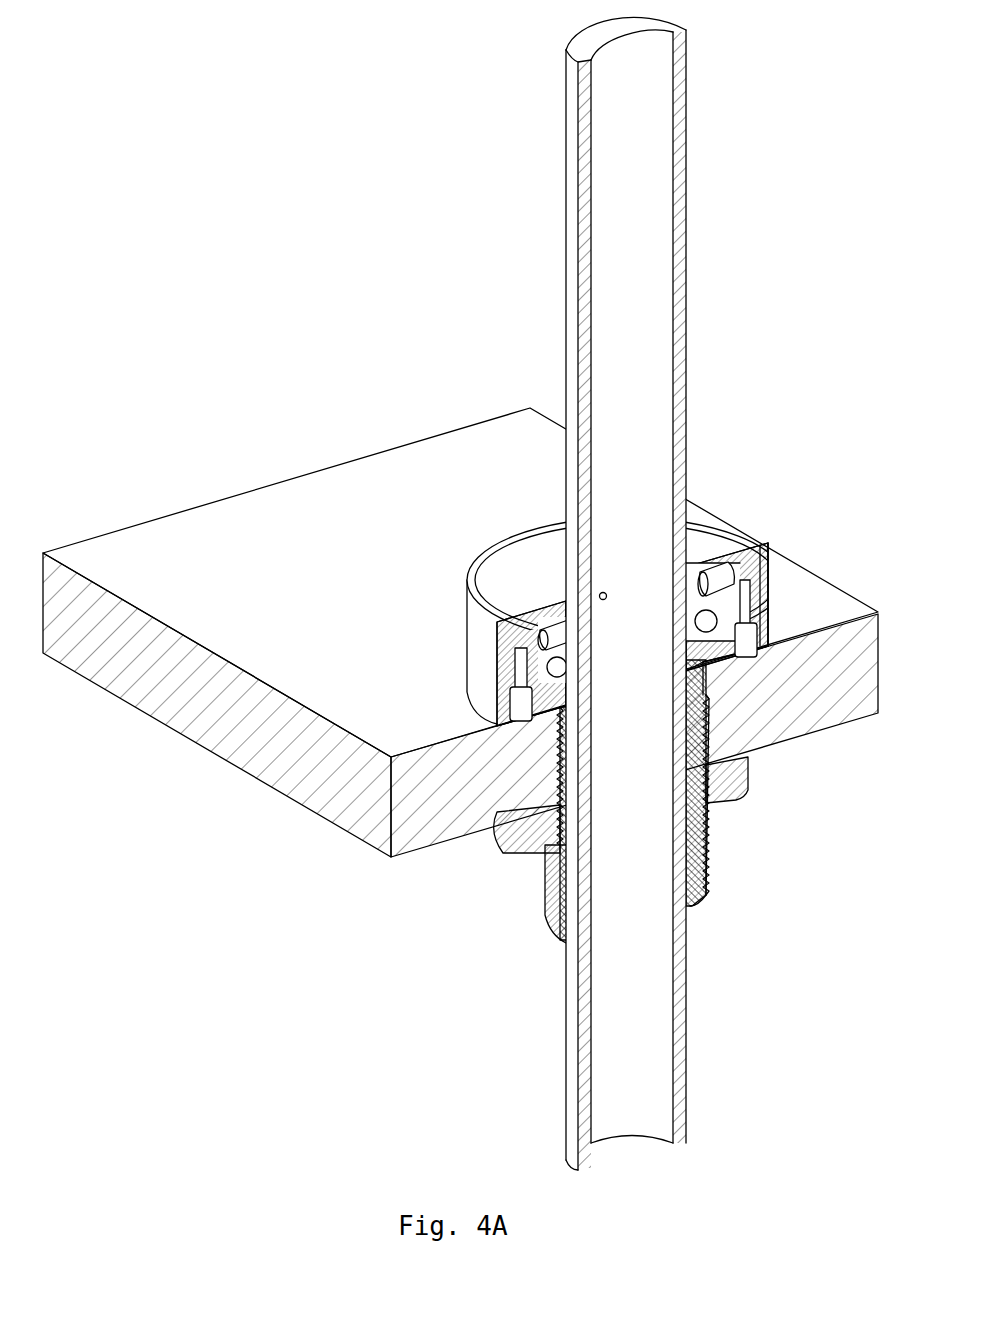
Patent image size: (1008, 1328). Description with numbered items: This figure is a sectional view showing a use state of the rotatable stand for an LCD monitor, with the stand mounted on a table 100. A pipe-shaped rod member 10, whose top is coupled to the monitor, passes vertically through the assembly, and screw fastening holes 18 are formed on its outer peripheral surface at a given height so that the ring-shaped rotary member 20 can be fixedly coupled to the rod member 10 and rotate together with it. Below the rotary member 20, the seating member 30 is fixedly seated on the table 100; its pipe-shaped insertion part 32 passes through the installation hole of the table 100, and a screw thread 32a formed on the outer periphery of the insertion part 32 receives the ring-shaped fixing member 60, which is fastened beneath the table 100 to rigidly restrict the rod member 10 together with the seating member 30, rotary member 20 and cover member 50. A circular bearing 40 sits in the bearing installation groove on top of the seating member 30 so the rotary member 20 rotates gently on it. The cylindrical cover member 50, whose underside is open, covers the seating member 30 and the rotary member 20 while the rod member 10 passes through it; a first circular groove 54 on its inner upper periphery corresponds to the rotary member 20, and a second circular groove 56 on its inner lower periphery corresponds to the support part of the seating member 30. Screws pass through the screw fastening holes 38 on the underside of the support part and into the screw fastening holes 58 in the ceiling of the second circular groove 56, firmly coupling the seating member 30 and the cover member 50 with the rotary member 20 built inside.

The rod member 10 is at (686, 373).
The screw fastening holes 18 is at (670, 588).
The rotary member 20 is at (712, 560).
The seating member 30 is at (720, 838).
The insertion part 32 is at (709, 885).
The screw thread 32a is at (545, 898).
The screw fastening holes 38 is at (497, 702).
The circular bearing 40 is at (768, 627).
The cover member 50 is at (472, 548).
The first circular groove 54 is at (540, 638).
The second circular groove 56 is at (493, 665).
The screw fastening holes 58 is at (745, 585).
The fixing member 60 is at (752, 795).
The table 100 is at (238, 525).